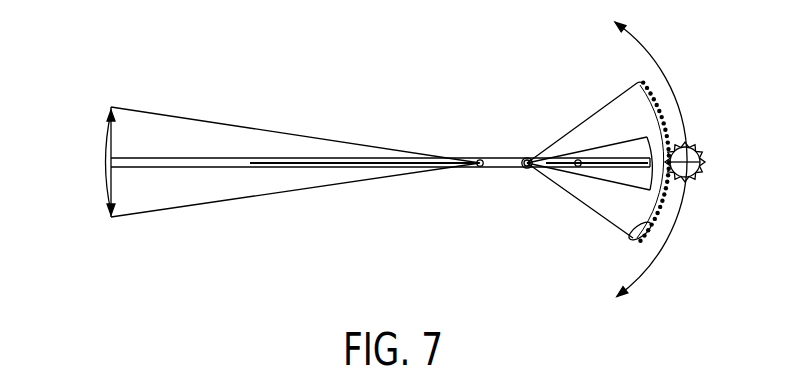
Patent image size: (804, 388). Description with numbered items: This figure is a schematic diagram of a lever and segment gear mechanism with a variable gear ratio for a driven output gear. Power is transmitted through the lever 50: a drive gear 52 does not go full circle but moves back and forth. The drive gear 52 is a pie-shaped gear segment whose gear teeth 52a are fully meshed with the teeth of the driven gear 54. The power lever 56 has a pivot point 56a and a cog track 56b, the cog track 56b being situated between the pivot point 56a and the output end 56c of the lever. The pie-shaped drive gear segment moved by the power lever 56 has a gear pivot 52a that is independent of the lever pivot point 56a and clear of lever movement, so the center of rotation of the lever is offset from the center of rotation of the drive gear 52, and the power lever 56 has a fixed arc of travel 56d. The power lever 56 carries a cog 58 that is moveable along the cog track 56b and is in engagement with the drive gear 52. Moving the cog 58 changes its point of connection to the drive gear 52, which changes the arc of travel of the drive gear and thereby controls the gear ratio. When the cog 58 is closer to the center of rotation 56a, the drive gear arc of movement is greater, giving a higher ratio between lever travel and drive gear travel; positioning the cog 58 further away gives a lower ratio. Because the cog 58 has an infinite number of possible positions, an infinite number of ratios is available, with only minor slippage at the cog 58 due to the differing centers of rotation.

The lever 50 is at (323, 80).
The drive gear 52 is at (593, 90).
The gear teeth / gear pivot 52a is at (523, 158).
The driven gear 54 is at (706, 185).
The power lever 56 is at (265, 169).
The pivot point 56a is at (477, 160).
The cog track 56b is at (588, 173).
The output end 56c is at (668, 140).
The arc of travel 56d is at (104, 186).
The cog 58 is at (575, 167).